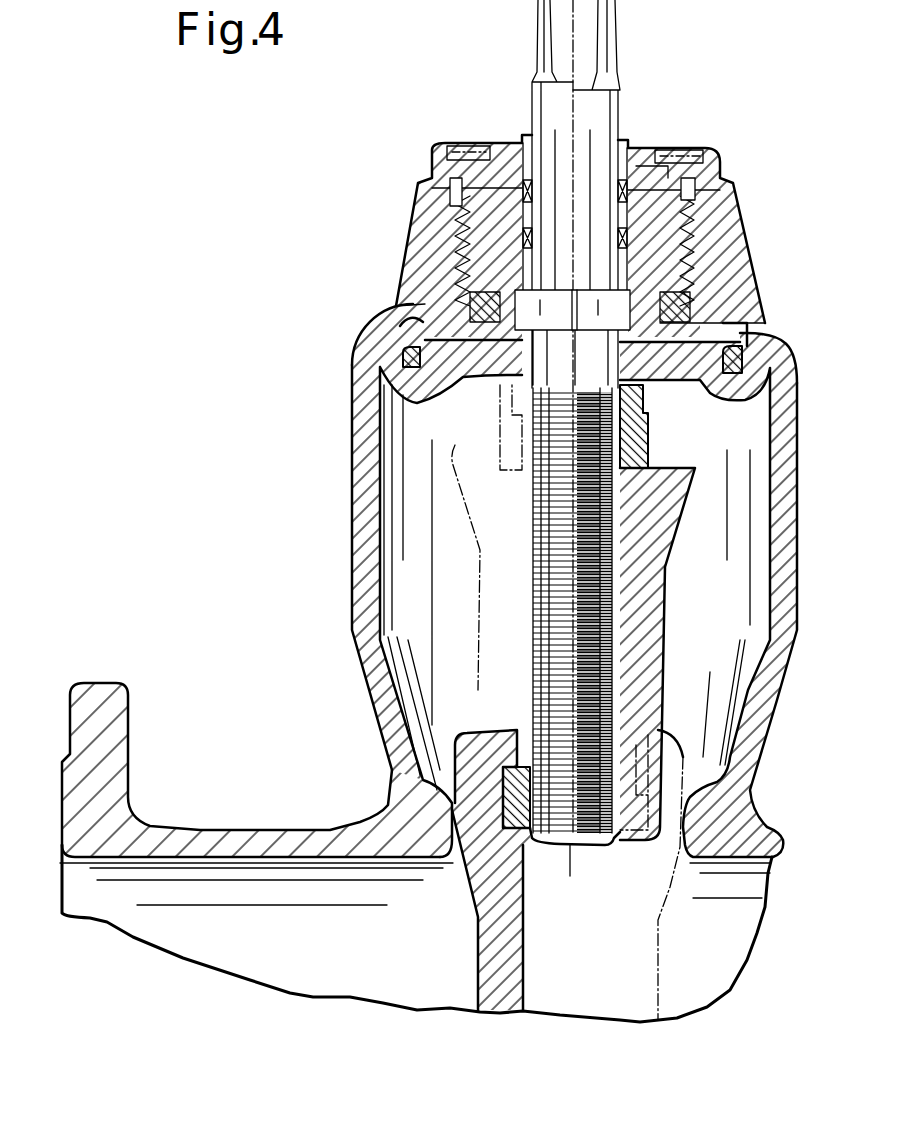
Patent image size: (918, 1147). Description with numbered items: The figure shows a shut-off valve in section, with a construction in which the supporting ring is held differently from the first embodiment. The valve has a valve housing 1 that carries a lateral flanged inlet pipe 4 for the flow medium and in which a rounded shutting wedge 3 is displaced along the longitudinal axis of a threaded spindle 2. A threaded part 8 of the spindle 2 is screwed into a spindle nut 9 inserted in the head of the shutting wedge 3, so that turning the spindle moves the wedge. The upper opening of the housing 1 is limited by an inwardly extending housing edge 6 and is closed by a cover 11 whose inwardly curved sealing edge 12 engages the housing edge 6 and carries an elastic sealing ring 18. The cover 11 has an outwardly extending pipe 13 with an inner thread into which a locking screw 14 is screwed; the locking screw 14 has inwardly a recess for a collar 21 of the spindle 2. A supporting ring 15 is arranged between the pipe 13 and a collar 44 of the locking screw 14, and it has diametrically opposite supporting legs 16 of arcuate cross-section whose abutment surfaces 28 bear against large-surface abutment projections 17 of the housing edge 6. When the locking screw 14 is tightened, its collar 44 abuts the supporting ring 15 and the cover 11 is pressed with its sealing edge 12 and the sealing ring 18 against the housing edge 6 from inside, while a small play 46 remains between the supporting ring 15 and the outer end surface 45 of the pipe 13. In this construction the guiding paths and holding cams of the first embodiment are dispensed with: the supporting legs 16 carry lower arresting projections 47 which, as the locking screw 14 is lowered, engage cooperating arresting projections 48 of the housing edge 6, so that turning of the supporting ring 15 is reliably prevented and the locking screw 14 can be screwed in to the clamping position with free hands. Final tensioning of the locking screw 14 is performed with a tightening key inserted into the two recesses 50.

The valve housing 1 is at (757, 727).
The threaded spindle 2 is at (603, 106).
The shutting wedge 3 is at (492, 937).
The inlet pipe 4 is at (286, 852).
The housing edge 6 is at (762, 352).
The threaded part 8 is at (533, 636).
The spindle nut 9 is at (633, 480).
The cover 11 is at (493, 372).
The sealing edge 12 is at (407, 392).
The pipe 13 is at (440, 258).
The locking screw 14 is at (668, 158).
The supporting ring 15 is at (432, 185).
The supporting legs 16 is at (740, 268).
The abutment projections 17 is at (757, 332).
The elastic sealing ring 18 is at (398, 358).
The collar 21 is at (470, 306).
The abutment surfaces 28 is at (760, 314).
The collar 44 is at (450, 158).
The outer end surface 45 is at (710, 198).
The play 46 is at (430, 218).
The arresting projections 47 is at (408, 318).
The arresting projections 48 is at (398, 331).
The recesses 50 is at (705, 152).